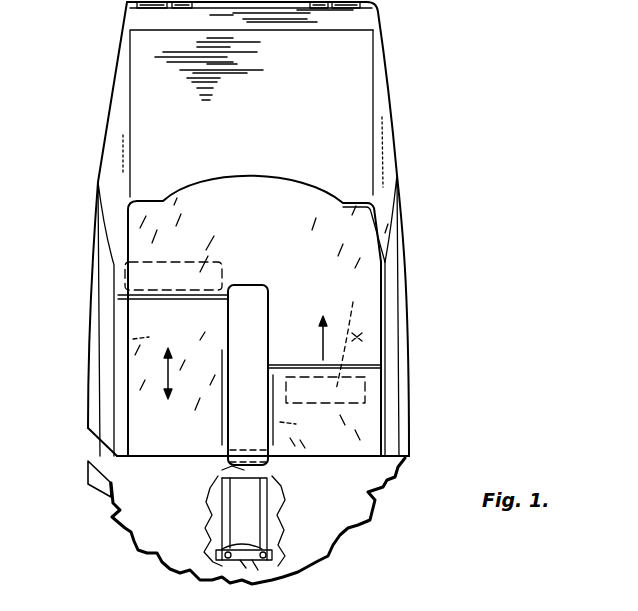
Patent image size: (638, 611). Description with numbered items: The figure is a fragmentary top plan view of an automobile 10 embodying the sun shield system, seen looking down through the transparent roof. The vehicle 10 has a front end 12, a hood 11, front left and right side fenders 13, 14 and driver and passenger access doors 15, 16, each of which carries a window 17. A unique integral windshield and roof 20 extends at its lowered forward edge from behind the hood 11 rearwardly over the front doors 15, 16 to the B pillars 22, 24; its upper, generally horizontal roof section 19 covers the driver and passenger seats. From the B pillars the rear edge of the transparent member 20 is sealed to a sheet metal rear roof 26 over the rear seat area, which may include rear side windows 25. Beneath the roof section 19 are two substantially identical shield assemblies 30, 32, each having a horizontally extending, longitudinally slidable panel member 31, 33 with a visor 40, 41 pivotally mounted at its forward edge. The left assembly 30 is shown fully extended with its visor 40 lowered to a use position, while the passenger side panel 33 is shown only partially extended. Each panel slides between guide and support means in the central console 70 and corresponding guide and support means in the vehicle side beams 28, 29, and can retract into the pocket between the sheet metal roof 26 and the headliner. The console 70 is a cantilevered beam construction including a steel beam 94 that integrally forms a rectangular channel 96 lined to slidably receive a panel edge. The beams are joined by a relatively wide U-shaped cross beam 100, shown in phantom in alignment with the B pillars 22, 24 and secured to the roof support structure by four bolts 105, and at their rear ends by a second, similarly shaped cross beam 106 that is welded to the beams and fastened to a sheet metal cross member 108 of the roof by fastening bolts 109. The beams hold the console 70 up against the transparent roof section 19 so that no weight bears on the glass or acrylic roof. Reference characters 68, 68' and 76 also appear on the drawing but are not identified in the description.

The automobile 10 is at (481, 60).
The hood 11 is at (265, 137).
The front end 12 is at (132, 2).
The front left side fender 13 is at (114, 78).
The front right side fender 14 is at (397, 135).
The driver access door 15 is at (88, 367).
The passenger access door 16 is at (408, 351).
The windows 17 is at (105, 327).
The roof section 19 is at (162, 427).
The integral windshield and roof 20 is at (306, 230).
The B pillar 22 is at (93, 452).
The B pillar 24 is at (390, 460).
The rear side windows 25 is at (107, 488).
The sheet metal rear roof 26 is at (343, 507).
The vehicle side beam 28 is at (128, 215).
The vehicle side beam 29 is at (384, 320).
The shield assembly 30 is at (125, 312).
The panel member 31 is at (144, 327).
The shield assembly 32 is at (370, 427).
The panel member 33 is at (294, 421).
The visor 40 is at (190, 282).
The visor 41 is at (349, 346).
The lever 68 is at (402, 600).
The lever alternate position 68' is at (434, 600).
The console 70 is at (274, 329).
The linkage 76 is at (490, 610).
The steel beam 94 is at (210, 526).
The rectangular channel means 96 is at (278, 529).
The U-shaped cross beam 100 is at (258, 467).
The bolts 105 is at (230, 463).
The second cross beam 106 is at (252, 566).
The sheet metal cross member 108 is at (222, 552).
The fastening bolts 109 is at (220, 555).